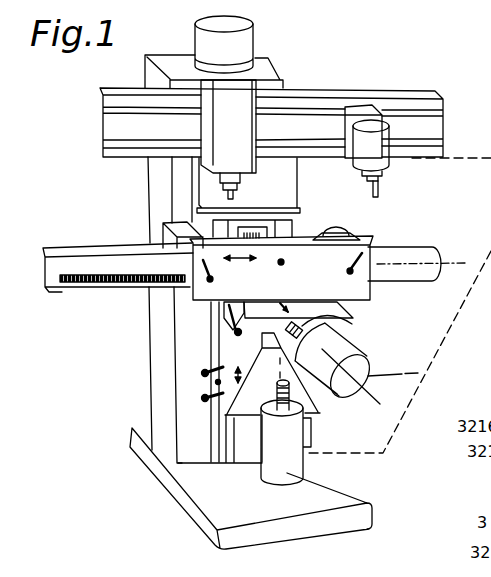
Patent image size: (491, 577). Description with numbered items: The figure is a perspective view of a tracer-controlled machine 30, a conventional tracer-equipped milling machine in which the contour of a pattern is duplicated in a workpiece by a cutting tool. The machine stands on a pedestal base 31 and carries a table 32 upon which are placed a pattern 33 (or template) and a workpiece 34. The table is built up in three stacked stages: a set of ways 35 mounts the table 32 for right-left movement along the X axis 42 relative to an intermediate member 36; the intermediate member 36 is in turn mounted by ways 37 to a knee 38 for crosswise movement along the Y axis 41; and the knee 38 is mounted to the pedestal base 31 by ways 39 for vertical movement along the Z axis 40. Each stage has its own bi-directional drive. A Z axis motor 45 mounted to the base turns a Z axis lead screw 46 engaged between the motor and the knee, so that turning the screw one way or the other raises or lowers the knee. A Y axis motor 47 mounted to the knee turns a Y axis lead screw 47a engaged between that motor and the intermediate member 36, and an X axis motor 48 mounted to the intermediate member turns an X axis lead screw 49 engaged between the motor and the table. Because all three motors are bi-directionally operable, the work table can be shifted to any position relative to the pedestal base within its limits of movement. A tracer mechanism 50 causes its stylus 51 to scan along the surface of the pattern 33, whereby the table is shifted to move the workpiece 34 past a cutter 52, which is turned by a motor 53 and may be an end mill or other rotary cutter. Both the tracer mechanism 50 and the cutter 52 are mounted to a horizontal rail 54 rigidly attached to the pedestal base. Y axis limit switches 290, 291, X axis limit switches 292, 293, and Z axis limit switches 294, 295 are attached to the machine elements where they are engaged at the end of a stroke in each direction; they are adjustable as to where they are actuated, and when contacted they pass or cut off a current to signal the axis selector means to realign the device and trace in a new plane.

The tracer-controlled machine 30 is at (93, 405).
The pedestal base 31 is at (180, 466).
The table 32 is at (83, 247).
The pattern 33 is at (336, 230).
The workpiece 34 is at (170, 223).
The ways 35 is at (176, 285).
The intermediate member 36 is at (214, 318).
The ways 37 is at (214, 322).
The knee 38 is at (207, 389).
The ways 39 is at (254, 462).
The Z axis 40 is at (231, 48).
The Y axis 41 is at (365, 396).
The X axis 42 is at (449, 245).
The Z axis motor 45 is at (293, 458).
The Z axis lead screw 46 is at (310, 390).
The Y axis motor 47 is at (368, 358).
The Y axis lead screw 47a is at (353, 326).
The X axis motor 48 is at (430, 244).
The X axis lead screw 49 is at (92, 283).
The tracer mechanism 50 is at (392, 138).
The stylus 51 is at (382, 191).
The cutter 52 is at (234, 195).
The motor 53 is at (255, 34).
The horizontal rail 54 is at (313, 120).
The Y axis limit switch 290 is at (256, 300).
The Y axis limit switch 291 is at (251, 363).
The X axis limit switch 292 is at (213, 279).
The X axis limit switch 293 is at (348, 273).
The Z axis limit switch 294 is at (206, 402).
The Z axis limit switch 295 is at (202, 372).